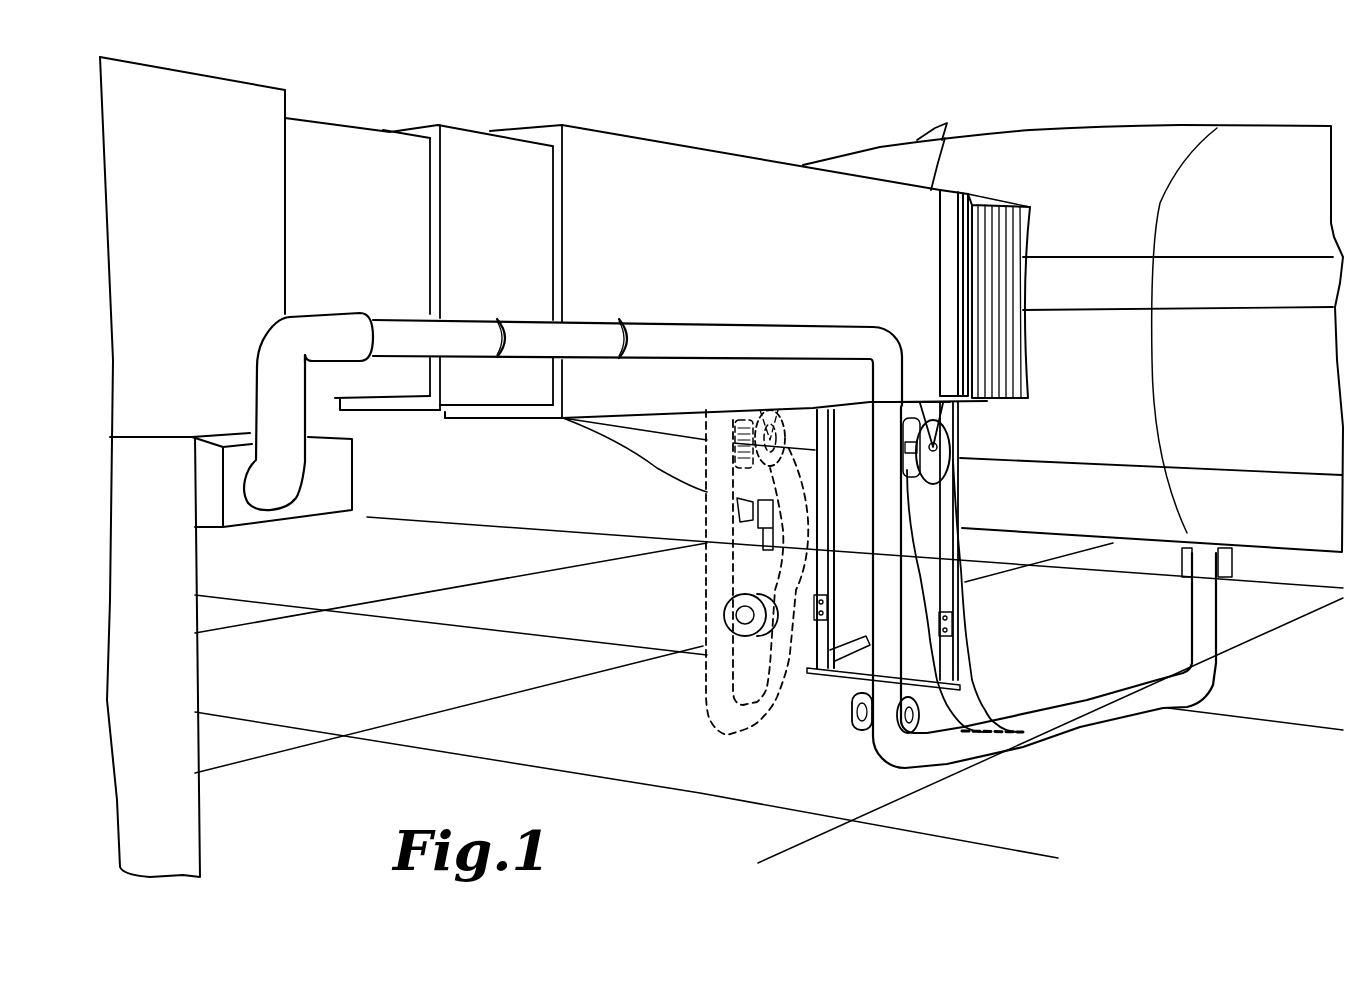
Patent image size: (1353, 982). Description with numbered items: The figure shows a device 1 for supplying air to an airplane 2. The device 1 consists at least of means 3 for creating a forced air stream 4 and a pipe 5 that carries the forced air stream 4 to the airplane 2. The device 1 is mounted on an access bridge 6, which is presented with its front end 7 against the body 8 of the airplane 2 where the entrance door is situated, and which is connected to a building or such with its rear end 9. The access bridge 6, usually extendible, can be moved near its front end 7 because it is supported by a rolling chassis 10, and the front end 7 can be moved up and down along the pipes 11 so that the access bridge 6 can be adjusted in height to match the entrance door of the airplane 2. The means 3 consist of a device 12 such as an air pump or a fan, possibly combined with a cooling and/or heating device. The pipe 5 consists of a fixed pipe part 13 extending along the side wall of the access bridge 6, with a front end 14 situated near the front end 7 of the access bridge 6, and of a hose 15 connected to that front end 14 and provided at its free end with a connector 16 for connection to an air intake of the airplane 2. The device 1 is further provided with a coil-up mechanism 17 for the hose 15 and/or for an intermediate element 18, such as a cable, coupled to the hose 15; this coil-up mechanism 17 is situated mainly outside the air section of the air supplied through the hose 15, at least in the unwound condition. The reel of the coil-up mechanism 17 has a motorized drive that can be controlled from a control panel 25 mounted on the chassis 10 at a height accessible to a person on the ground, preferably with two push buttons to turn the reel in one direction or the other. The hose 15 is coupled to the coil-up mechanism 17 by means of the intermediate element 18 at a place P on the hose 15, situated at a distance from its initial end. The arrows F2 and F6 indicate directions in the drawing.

The device 1 is at (720, 283).
The airplane 2 is at (1260, 147).
The means for creating a forced air stream 3 is at (245, 552).
The forced air stream 4 is at (723, 342).
The pipe 5 is at (860, 420).
The access bridge 6 is at (590, 153).
The front end 7 is at (1027, 241).
The body 8 is at (1071, 243).
The rear end 9 is at (286, 100).
The rolling chassis 10 is at (833, 670).
The pipes 11 is at (800, 670).
The device 12 is at (323, 503).
The fixed pipe part 13 is at (790, 340).
The front end 14 is at (917, 395).
The hose 15 is at (713, 683).
The connector 16 is at (1208, 552).
The coil-up mechanism 17 is at (732, 452).
The intermediate element 18 is at (961, 578).
The control panel 25 is at (814, 607).
The air flow direction F2 is at (1130, 338).
The force direction F6 is at (1004, 687).
The place P is at (1000, 738).